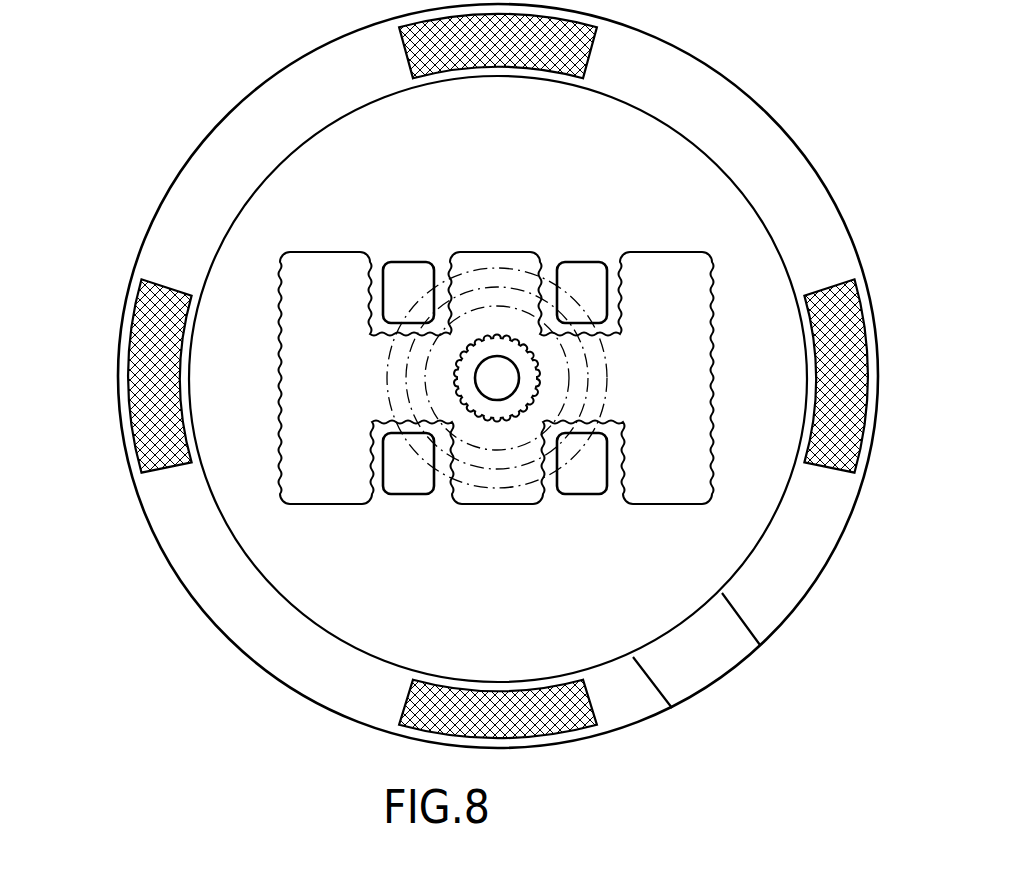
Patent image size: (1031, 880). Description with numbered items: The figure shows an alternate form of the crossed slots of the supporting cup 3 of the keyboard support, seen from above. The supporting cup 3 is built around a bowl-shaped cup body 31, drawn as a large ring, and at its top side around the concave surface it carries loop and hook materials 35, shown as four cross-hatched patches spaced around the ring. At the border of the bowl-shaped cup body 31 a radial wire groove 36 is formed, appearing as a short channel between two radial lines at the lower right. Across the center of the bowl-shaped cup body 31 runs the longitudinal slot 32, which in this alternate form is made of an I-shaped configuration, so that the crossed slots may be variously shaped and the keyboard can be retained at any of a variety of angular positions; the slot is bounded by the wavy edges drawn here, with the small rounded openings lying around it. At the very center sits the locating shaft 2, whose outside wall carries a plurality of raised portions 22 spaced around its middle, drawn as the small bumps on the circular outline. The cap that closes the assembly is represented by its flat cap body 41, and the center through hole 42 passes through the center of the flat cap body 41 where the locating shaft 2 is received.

The locating shaft 2 is at (518, 358).
The raised portions 22 is at (487, 337).
The supporting cup 3 is at (807, 510).
The bowl-shaped cup body 31 is at (632, 587).
The longitudinal slot 32 is at (673, 312).
The loop and hook materials 35 is at (837, 370).
The radial wire groove 36 is at (703, 653).
The flat cap body 41 is at (500, 478).
The center through hole 42 is at (437, 433).